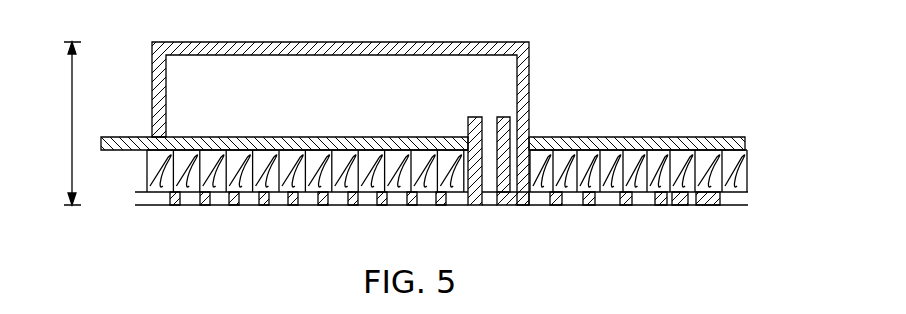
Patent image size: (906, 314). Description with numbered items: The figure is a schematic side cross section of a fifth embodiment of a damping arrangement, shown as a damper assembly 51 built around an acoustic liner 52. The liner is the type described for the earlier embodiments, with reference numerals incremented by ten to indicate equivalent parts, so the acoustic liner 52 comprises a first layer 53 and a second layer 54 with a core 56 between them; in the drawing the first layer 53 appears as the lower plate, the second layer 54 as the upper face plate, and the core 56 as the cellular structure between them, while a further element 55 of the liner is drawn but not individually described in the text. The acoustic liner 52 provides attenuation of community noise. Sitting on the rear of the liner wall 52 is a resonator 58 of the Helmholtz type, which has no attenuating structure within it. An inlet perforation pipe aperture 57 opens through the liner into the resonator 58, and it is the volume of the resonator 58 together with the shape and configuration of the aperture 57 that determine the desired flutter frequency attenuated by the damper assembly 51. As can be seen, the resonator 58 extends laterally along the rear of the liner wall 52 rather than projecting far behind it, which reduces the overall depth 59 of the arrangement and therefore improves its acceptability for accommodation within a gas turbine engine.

The damper assembly 51 is at (559, 87).
The acoustic liner 52 is at (756, 138).
The first layer 53 is at (680, 206).
The second layer 54 is at (680, 138).
The contact pads 55 is at (252, 206).
The core 56 is at (560, 186).
The inlet perforation pipe aperture 57 is at (484, 170).
The resonator 58 is at (472, 52).
The depth 59 is at (58, 123).